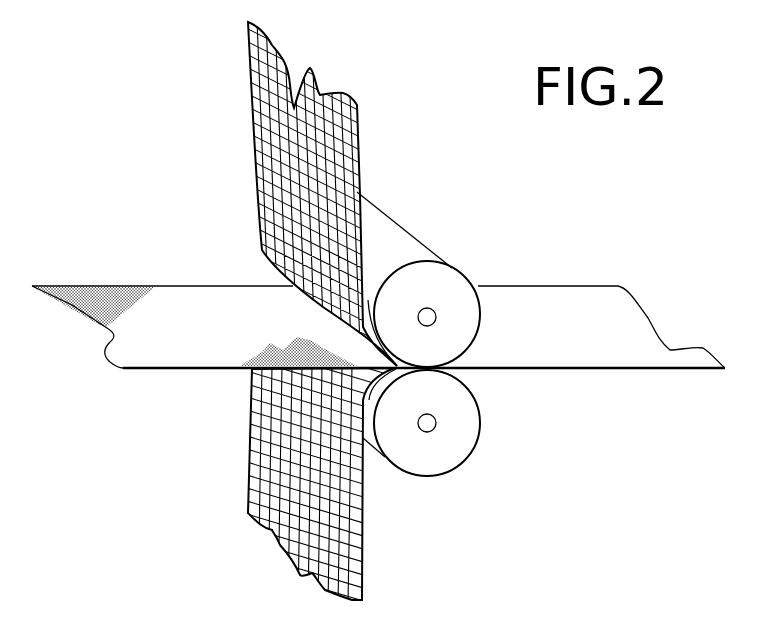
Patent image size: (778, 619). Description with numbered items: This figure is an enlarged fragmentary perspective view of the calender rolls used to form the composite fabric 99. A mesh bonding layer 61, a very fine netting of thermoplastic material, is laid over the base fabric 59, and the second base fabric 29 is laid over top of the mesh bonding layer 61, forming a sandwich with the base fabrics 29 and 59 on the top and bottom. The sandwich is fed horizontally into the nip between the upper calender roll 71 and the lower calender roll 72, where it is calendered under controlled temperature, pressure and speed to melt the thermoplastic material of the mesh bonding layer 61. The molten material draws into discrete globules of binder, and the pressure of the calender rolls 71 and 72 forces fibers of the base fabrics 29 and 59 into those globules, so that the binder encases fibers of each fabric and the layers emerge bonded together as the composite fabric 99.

The base fabric 29 is at (360, 163).
The base fabric 59 is at (362, 530).
The mesh bonding layer 61 is at (163, 370).
The calender roll 71 is at (435, 287).
The calender roll 72 is at (433, 457).
The composite fabric 99 is at (627, 338).